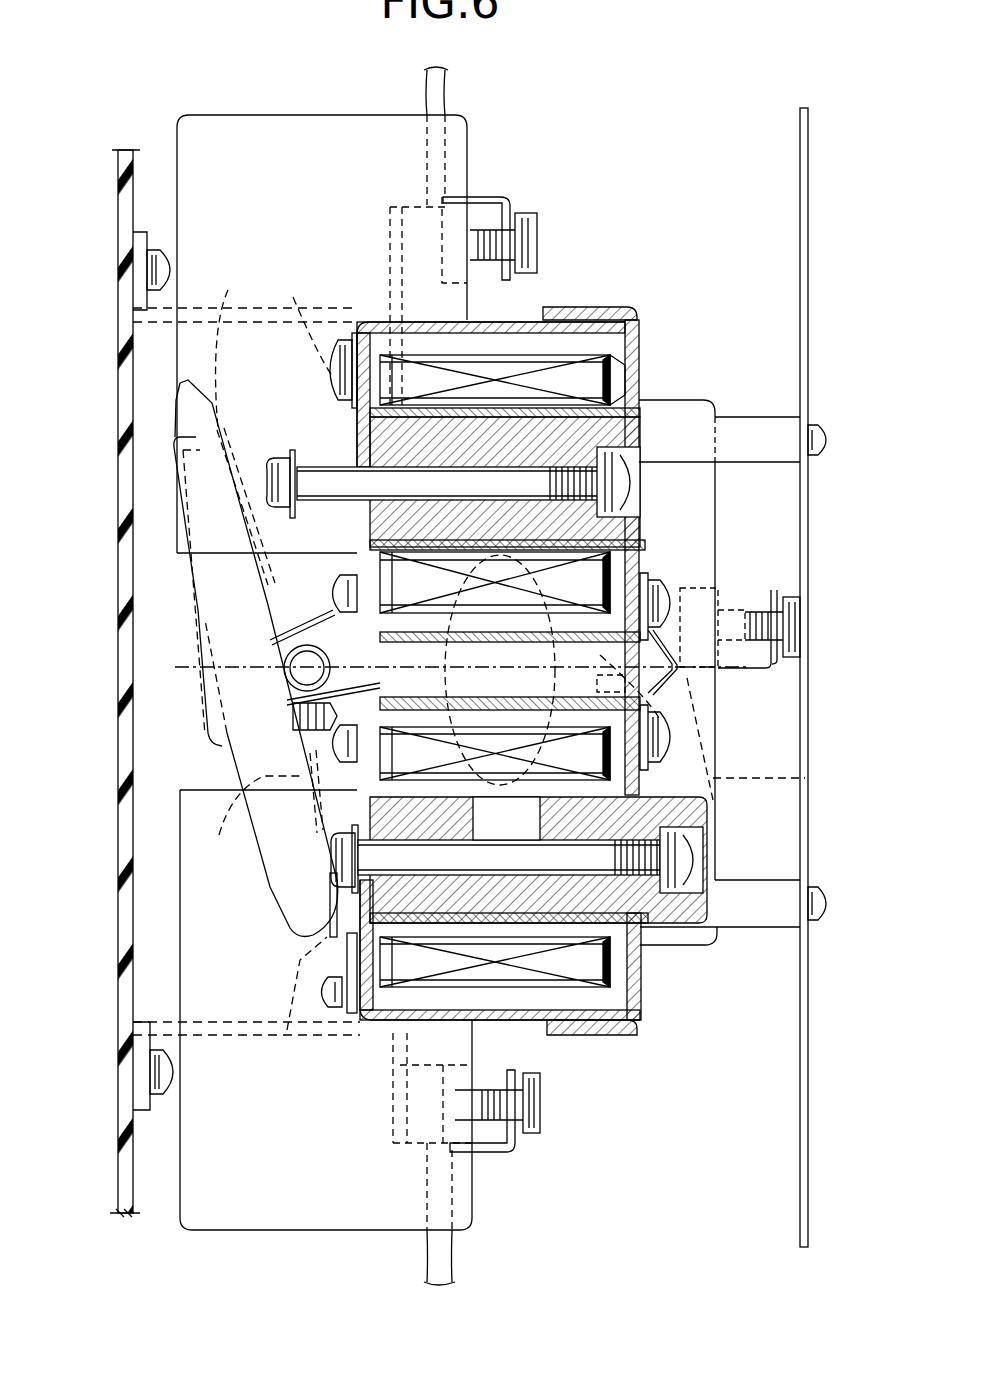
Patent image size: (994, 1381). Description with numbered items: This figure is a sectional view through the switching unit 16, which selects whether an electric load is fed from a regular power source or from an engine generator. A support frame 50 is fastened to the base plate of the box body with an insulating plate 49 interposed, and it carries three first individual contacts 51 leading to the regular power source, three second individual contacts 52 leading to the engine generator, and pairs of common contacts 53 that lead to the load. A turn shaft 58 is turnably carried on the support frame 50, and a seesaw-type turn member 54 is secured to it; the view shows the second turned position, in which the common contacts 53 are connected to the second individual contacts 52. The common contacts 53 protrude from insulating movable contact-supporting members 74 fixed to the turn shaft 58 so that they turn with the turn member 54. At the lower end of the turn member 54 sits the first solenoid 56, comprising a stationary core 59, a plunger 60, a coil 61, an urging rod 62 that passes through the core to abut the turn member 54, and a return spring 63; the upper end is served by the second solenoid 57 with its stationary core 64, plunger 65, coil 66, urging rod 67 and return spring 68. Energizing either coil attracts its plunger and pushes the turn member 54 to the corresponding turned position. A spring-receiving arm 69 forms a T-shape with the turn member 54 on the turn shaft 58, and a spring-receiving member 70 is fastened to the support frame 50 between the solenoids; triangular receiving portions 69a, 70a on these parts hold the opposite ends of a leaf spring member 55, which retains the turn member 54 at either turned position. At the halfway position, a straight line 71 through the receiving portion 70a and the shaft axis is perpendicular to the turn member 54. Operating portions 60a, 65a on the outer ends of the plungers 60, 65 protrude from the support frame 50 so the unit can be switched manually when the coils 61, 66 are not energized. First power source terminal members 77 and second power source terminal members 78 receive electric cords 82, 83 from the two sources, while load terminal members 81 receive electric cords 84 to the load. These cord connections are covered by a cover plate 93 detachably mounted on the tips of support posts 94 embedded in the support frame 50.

The switching unit 16 is at (590, 1052).
The insulating plate 49 is at (133, 1143).
The support frame 50 is at (597, 308).
The first individual contact 51 is at (314, 511).
The second individual contact 52 is at (312, 1016).
The common contact 53 is at (374, 642).
The turn member 54 is at (200, 527).
The spring member 55 is at (653, 718).
The first solenoid 56 is at (650, 977).
The second solenoid 57 is at (377, 315).
The turn shaft 58 is at (273, 677).
The stationary core 59 is at (460, 827).
The plunger 60 is at (593, 905).
The operating portion 60a is at (700, 815).
The coil 61 is at (430, 990).
The urging rod 62 is at (507, 860).
The return spring 63 is at (340, 903).
The stationary core 64 is at (363, 450).
The plunger 65 is at (548, 440).
The operating portion 65a is at (630, 400).
The coil 66 is at (635, 345).
The urging rod 67 is at (315, 473).
The return spring 68 is at (298, 503).
The spring-receiving arm 69 is at (307, 620).
The receiving portion 69a is at (545, 650).
The spring-receiving member 70 is at (700, 622).
The receiving portion 70a is at (655, 688).
The straight line 71 is at (253, 665).
The movable contact-supporting member 74 is at (168, 438).
The first power source terminal member 77 is at (485, 200).
The second power source terminal member 78 is at (480, 1133).
The load terminal member 81 is at (735, 605).
The electric cord 82 is at (440, 90).
The electric cord 83 is at (427, 1263).
The electric cord 84 is at (808, 778).
The cover plate 93 is at (800, 258).
The support post 94 is at (755, 433).